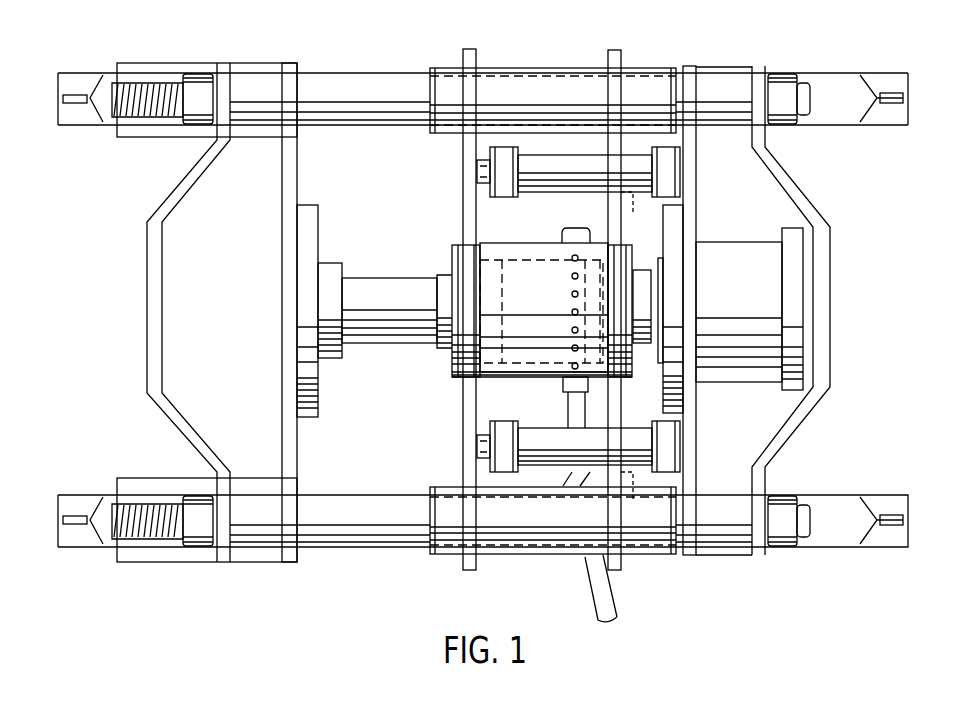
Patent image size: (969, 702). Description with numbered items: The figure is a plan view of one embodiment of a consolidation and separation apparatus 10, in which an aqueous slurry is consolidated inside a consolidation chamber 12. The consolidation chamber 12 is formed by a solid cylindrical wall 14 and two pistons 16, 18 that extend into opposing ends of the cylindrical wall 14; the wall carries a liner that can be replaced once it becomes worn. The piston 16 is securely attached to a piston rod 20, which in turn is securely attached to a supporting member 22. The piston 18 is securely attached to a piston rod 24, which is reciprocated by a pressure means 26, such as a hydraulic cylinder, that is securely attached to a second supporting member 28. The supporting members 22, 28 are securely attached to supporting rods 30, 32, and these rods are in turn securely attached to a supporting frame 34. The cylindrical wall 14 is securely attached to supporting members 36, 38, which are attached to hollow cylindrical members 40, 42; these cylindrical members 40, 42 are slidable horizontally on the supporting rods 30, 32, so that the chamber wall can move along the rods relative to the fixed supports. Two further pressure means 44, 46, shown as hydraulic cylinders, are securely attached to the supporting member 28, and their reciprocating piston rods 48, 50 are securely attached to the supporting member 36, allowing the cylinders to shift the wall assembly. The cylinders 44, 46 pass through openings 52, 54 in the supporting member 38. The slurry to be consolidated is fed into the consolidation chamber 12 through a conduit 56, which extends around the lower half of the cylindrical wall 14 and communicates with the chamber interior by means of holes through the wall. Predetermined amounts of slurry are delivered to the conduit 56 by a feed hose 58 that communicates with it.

The apparatus 10 is at (572, 48).
The consolidation chamber 12 is at (520, 242).
The cylindrical wall 14 is at (487, 378).
The piston 16 is at (452, 262).
The piston 18 is at (640, 275).
The piston rod 20 is at (359, 278).
The supporting member 22 is at (290, 162).
The piston rod 24 is at (655, 346).
The pressure means 26 is at (731, 244).
The supporting member 28 is at (690, 182).
The supporting rod 30 is at (344, 73).
The supporting rod 32 is at (321, 495).
The supporting frame 34 is at (831, 496).
The supporting member 36 is at (463, 214).
The supporting member 38 is at (608, 226).
The hollow cylindrical member 40 is at (513, 76).
The hollow cylindrical member 42 is at (504, 555).
The pressure means 44 is at (540, 186).
The pressure means 46 is at (540, 465).
The reciprocating piston rod 48 is at (477, 168).
The reciprocating piston rod 50 is at (477, 443).
The opening 52 is at (632, 208).
The opening 54 is at (632, 493).
The conduit 56 is at (566, 388).
The feed hose 58 is at (590, 572).